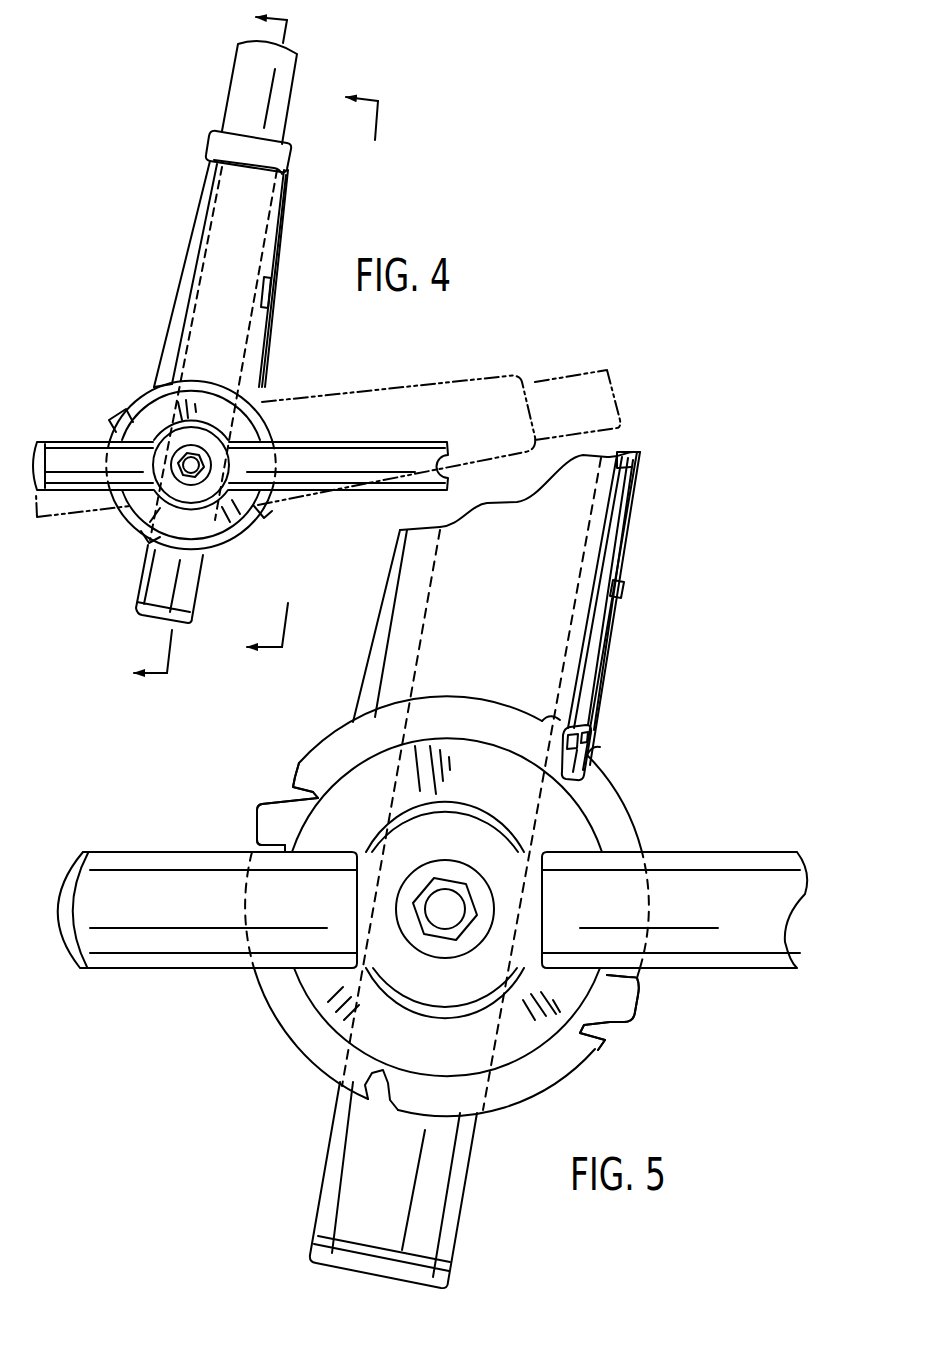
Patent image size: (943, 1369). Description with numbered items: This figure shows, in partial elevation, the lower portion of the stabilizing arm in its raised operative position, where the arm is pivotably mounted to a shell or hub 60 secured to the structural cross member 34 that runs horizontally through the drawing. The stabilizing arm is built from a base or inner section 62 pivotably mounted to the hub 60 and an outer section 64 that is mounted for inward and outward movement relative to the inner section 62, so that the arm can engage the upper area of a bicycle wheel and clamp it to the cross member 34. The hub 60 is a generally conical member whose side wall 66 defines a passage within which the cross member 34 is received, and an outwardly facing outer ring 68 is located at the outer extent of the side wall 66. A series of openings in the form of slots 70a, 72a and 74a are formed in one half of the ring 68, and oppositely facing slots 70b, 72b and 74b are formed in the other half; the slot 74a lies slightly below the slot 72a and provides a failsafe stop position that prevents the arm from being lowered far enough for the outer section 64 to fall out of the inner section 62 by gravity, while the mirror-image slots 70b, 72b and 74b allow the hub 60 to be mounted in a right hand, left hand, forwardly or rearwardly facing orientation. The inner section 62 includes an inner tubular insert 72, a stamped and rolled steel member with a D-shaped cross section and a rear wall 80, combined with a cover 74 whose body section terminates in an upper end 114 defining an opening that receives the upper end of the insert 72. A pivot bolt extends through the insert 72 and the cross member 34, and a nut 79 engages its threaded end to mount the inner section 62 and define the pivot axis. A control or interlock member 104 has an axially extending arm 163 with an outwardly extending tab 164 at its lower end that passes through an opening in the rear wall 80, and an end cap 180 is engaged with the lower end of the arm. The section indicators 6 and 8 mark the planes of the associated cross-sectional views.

In FIG. 4, the section line 6- 6 is at (312, 372).
In FIG. 4, the section line 8- 8 is at (210, 345).
In FIG. 4, the structural cross member 34 is at (417, 434).
In FIG. 5, the structural cross member 34 is at (703, 844).
In FIG. 4, the hub 60 is at (179, 462).
In FIG. 4, the inner section 62 is at (206, 332).
In FIG. 4, the outer section 64 is at (224, 92).
In FIG. 5, the outer section 64 is at (455, 873).
In FIG. 4, the side wall 66 is at (217, 533).
In FIG. 5, the side wall 66 is at (312, 1002).
In FIG. 4, the outer ring 68 is at (143, 401).
In FIG. 5, the outer ring 68 is at (316, 765).
In FIG. 5, the slot 70a is at (563, 776).
In FIG. 5, the slot 70b is at (378, 1089).
In FIG. 5, the insert 72 is at (640, 456).
In FIG. 5, the slot 72a is at (630, 984).
In FIG. 5, the slot 72b is at (258, 848).
In FIG. 4, the cover 74 is at (286, 224).
In FIG. 5, the slot 74a is at (598, 1034).
In FIG. 5, the slot 74b is at (300, 789).
In FIG. 4, the nut 79 is at (203, 456).
In FIG. 5, the nut 79 is at (473, 890).
In FIG. 4, the rear wall 80 is at (214, 200).
In FIG. 5, the rear wall 80 is at (493, 587).
In FIG. 4, the interlock member 104 is at (263, 346).
In FIG. 5, the interlock member 104 is at (624, 567).
In FIG. 4, the upper end 114 is at (209, 141).
In FIG. 5, the arm 163 is at (624, 594).
In FIG. 5, the tab 164 is at (578, 752).
In FIG. 5, the end cap 180 is at (450, 1290).